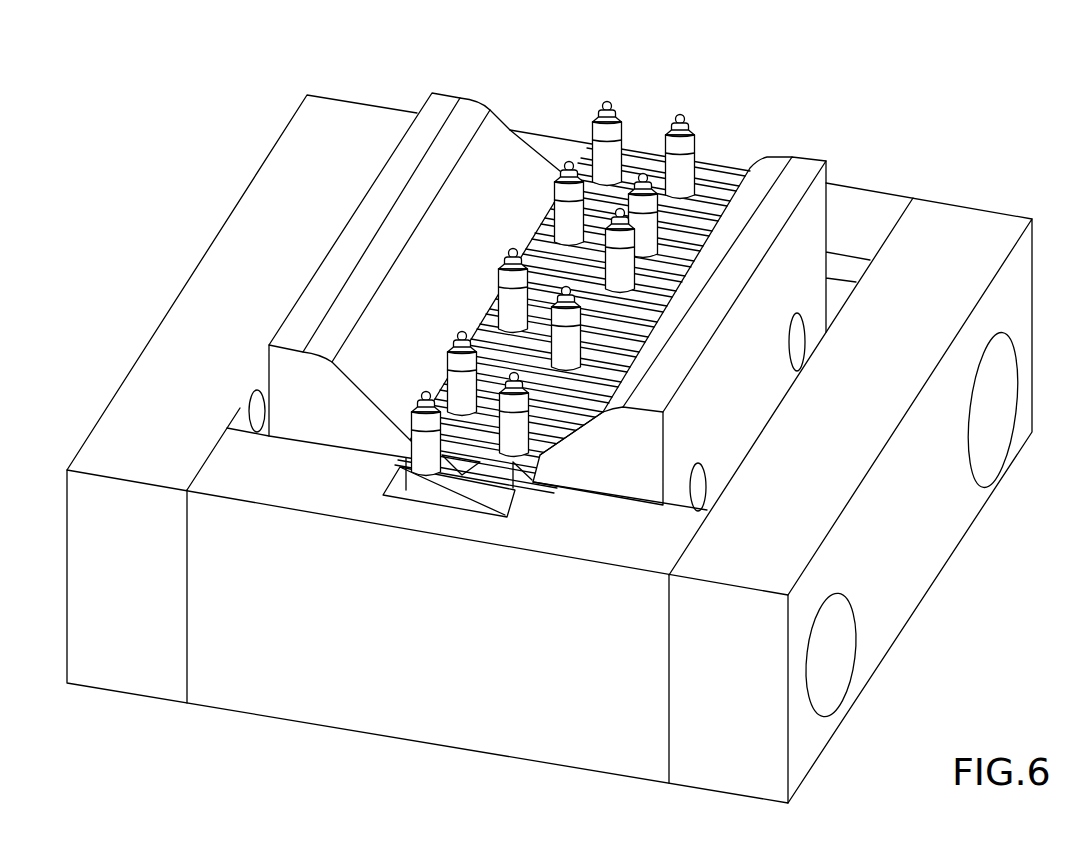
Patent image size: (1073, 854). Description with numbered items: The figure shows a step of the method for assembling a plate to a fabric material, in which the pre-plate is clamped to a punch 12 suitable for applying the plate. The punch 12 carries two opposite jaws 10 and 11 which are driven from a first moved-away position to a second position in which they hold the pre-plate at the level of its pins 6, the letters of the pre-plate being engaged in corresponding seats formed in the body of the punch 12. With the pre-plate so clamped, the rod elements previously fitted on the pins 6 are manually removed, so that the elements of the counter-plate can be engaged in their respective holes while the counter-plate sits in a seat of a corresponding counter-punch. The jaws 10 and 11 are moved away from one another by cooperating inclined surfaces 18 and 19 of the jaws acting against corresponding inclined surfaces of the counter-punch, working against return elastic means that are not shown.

The pins 6 is at (557, 217).
The jaw 10 is at (293, 395).
The jaw 11 is at (800, 253).
The punch 12 is at (373, 665).
The inclined surface 18 is at (512, 165).
The inclined surface 19 is at (713, 210).